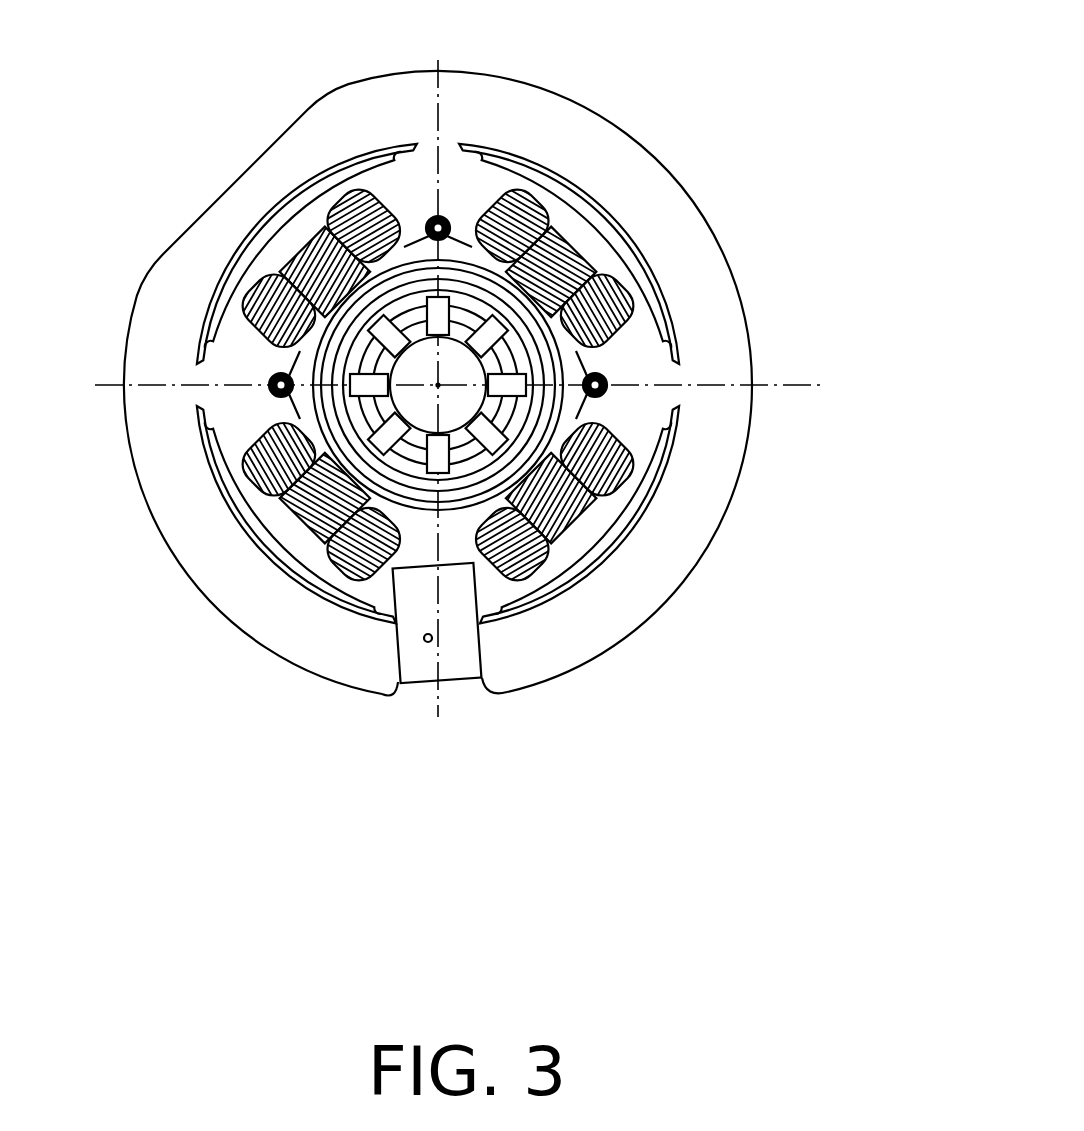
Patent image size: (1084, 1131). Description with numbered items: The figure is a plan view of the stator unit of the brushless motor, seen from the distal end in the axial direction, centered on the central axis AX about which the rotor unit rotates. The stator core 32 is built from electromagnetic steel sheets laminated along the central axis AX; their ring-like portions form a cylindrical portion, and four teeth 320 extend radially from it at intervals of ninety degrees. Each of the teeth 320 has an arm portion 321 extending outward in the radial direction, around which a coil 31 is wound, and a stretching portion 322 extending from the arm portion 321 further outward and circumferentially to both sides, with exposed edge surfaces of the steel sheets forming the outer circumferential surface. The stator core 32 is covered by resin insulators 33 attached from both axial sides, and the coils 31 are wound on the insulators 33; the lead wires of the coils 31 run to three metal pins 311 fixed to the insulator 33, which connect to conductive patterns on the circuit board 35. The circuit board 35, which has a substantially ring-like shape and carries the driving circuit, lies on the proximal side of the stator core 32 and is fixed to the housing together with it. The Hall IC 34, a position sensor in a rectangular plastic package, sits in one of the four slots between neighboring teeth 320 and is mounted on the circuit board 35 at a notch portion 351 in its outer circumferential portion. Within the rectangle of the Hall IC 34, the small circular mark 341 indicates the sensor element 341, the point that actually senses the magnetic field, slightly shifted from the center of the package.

The central axis AX is at (438, 385).
The metal pins 311 is at (443, 221).
The circuit board 35 is at (667, 172).
The coil 31 is at (612, 405).
The stretching portion 322 is at (670, 422).
The arm portion 321 is at (596, 500).
The teeth 320 is at (708, 524).
The stator core 32 is at (708, 524).
The insulator 33 is at (598, 545).
The Hall IC 34 is at (452, 683).
The sensor element 341 is at (427, 645).
The notch portion 351 is at (483, 687).